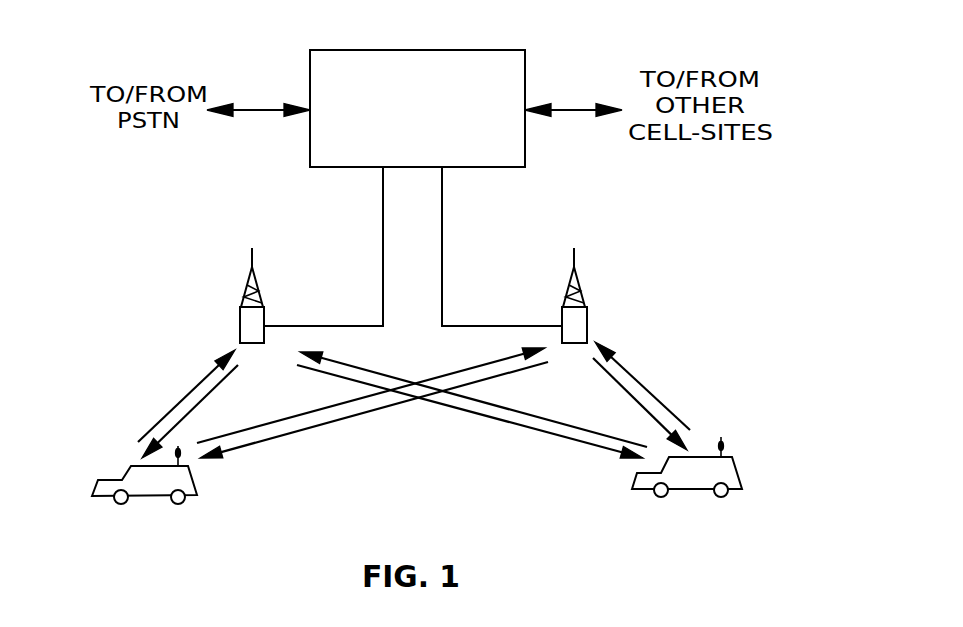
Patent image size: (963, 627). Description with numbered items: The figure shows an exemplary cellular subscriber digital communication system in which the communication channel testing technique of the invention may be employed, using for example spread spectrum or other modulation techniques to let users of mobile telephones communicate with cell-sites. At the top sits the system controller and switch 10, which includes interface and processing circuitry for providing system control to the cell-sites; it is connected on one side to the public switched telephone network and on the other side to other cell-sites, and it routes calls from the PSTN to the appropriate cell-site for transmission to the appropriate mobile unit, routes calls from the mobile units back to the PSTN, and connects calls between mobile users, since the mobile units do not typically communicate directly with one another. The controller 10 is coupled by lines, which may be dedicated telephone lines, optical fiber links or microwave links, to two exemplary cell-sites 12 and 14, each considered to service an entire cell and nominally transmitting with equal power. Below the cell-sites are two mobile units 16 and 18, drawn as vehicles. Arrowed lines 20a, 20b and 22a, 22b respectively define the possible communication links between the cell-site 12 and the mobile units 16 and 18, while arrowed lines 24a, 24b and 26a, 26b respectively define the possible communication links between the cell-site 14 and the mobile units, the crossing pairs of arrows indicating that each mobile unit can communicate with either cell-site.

The system controller and switch 10 is at (408, 50).
The cell-site 12 is at (240, 319).
The cell-site 14 is at (587, 318).
The mobile unit 16 is at (97, 487).
The mobile unit 18 is at (742, 475).
The arrowed line 20a is at (212, 392).
The arrowed line 20b is at (188, 394).
The arrowed line 22a is at (595, 447).
The arrowed line 22b is at (345, 362).
The arrowed line 24a is at (625, 389).
The arrowed line 24b is at (647, 390).
The arrowed line 26a is at (257, 442).
The arrowed line 26b is at (508, 357).